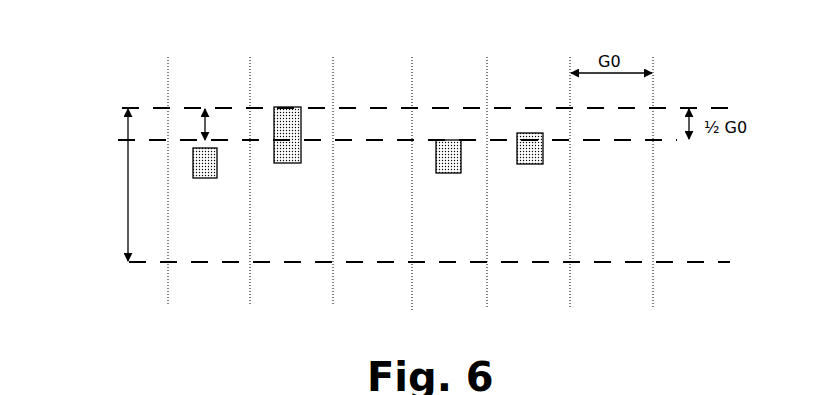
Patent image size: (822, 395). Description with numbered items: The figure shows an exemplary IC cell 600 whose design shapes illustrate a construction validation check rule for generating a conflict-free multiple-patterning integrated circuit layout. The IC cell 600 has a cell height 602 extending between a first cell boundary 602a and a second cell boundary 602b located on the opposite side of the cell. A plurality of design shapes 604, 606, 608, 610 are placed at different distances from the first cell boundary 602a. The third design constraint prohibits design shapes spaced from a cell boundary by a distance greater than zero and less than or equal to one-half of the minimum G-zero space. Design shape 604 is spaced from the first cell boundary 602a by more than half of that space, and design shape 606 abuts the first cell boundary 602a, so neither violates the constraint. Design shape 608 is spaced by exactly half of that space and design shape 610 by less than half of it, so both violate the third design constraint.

The IC cell 600 is at (112, 20).
The cell height 602 is at (105, 185).
The first cell boundary 602a is at (735, 108).
The second cell boundary 602b is at (730, 262).
The design shape 604 is at (203, 178).
The design shape 606 is at (288, 163).
The design shape 608 is at (449, 173).
The design shape 610 is at (530, 164).